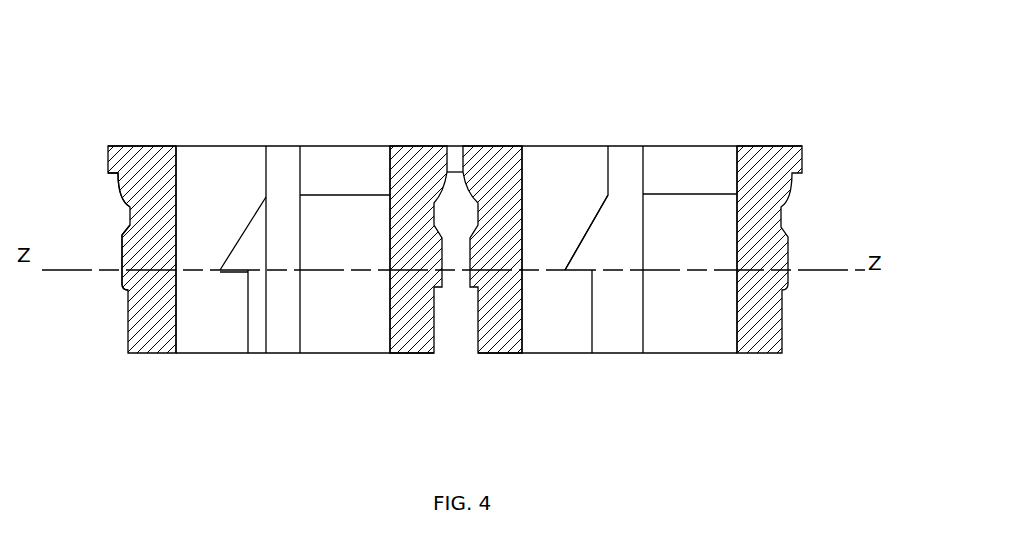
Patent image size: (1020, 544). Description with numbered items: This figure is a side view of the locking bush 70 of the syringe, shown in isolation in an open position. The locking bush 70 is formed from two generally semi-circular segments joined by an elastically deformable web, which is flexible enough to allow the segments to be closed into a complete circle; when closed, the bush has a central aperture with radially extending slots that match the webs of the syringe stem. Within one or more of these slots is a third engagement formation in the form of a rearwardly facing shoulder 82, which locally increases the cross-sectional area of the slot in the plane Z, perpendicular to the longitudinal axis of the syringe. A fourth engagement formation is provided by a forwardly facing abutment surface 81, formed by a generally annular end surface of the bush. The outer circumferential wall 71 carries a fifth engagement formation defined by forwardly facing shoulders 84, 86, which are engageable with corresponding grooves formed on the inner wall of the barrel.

The locking bush 70 is at (667, 137).
The outer circumferential wall 71 is at (788, 255).
The forwardly facing abutment surface 81 is at (153, 362).
The rearwardly facing shoulder 82 is at (579, 265).
The forwardly facing shoulder 84 is at (124, 297).
The forwardly facing shoulder 86 is at (116, 179).